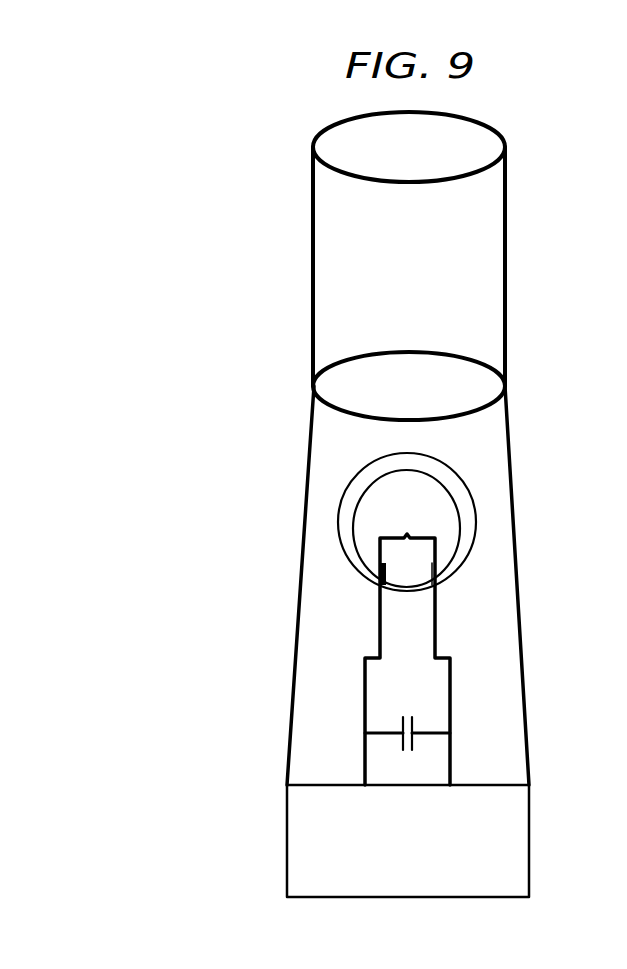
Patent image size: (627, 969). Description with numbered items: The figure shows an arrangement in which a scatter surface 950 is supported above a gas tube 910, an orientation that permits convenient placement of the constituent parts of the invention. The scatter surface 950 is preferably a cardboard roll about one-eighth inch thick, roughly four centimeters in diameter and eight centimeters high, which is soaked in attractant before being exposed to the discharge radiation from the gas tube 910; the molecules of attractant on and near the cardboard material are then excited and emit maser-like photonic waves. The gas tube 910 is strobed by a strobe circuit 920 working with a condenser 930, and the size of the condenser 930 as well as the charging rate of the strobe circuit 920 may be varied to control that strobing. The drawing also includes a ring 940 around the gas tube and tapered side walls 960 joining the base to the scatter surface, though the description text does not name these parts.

The gas tube 910 is at (442, 520).
The strobe circuit 920 is at (510, 828).
The condenser 930 is at (435, 732).
The ring aperture 940 is at (475, 483).
The scatter surface 950 is at (488, 233).
The tapered housing walls 960 is at (518, 588).